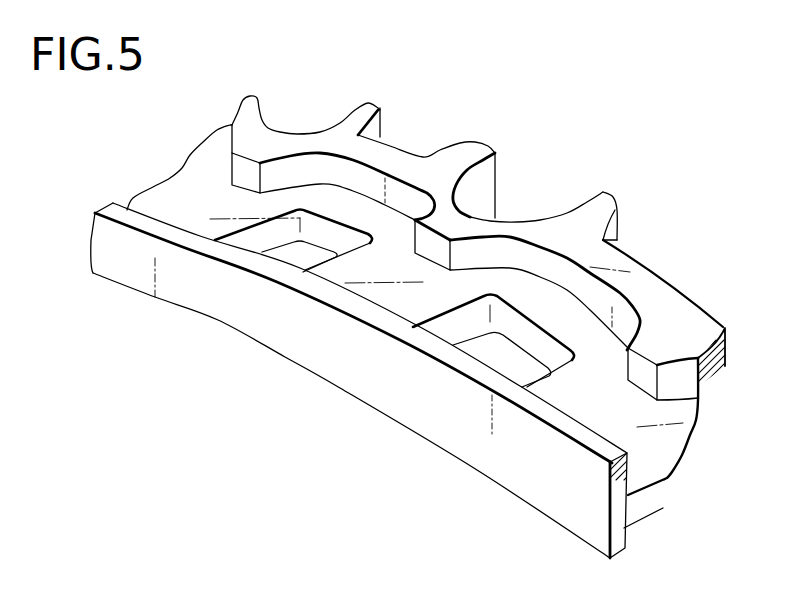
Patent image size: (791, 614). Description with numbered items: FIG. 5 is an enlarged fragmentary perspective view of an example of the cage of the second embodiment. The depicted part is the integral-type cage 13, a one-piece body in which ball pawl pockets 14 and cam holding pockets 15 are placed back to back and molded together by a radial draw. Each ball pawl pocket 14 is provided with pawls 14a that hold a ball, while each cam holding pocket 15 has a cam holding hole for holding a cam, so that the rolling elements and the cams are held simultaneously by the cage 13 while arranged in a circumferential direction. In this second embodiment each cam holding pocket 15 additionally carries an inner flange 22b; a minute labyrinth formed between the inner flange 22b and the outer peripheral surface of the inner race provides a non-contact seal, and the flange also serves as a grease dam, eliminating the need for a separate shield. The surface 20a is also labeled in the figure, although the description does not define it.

The integral-type cage 13 is at (658, 254).
The ball pawl pocket 14 is at (331, 123).
The pawl 14a is at (484, 175).
The cam holding pocket 15 is at (291, 256).
The front strip surface 20a is at (587, 440).
The inner flange 22b is at (619, 548).